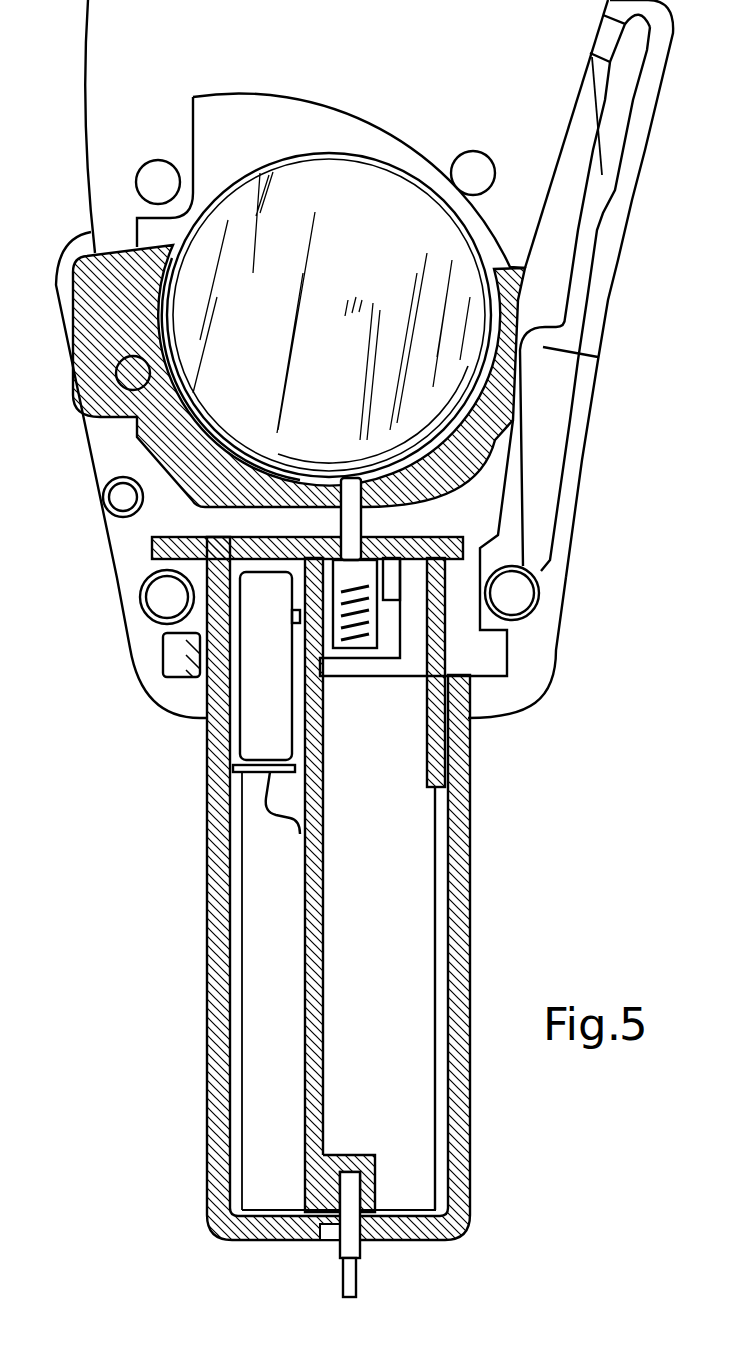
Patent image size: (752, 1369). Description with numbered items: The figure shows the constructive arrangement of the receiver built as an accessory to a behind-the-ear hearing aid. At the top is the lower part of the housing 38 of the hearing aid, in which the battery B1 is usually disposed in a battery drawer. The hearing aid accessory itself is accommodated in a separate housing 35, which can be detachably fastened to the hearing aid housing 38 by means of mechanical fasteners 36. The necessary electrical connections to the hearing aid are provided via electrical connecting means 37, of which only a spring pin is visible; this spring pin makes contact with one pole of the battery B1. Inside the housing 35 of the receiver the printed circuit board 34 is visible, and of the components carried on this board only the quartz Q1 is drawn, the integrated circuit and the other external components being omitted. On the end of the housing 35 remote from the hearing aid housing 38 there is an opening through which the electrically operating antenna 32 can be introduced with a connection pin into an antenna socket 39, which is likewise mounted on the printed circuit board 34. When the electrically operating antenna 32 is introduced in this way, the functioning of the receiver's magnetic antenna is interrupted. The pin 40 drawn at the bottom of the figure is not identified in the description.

The battery B1 is at (352, 172).
The quartz Q1 is at (262, 657).
The electrically operating antenna 32 is at (358, 1283).
The printed circuit board 34 is at (320, 882).
The housing 35 is at (468, 879).
The mechanical fasteners 36 is at (210, 540).
The electrical connecting means 37 is at (361, 518).
The housing of a behind-the-ear hearing aid 38 is at (523, 637).
The antenna socket 39 is at (333, 1162).
The contact pin 40 is at (352, 1197).